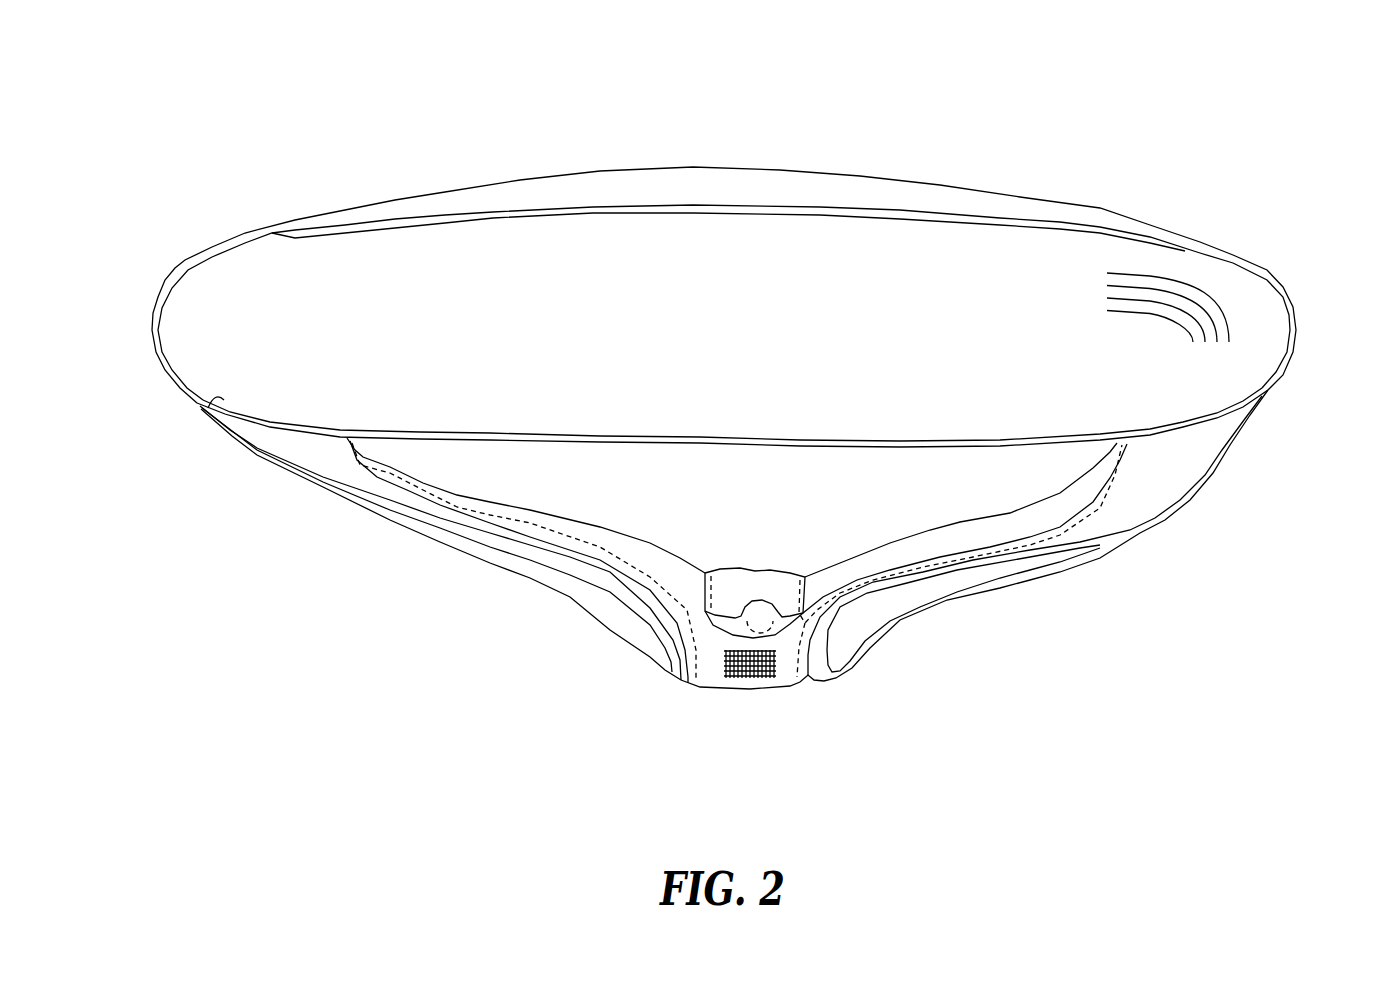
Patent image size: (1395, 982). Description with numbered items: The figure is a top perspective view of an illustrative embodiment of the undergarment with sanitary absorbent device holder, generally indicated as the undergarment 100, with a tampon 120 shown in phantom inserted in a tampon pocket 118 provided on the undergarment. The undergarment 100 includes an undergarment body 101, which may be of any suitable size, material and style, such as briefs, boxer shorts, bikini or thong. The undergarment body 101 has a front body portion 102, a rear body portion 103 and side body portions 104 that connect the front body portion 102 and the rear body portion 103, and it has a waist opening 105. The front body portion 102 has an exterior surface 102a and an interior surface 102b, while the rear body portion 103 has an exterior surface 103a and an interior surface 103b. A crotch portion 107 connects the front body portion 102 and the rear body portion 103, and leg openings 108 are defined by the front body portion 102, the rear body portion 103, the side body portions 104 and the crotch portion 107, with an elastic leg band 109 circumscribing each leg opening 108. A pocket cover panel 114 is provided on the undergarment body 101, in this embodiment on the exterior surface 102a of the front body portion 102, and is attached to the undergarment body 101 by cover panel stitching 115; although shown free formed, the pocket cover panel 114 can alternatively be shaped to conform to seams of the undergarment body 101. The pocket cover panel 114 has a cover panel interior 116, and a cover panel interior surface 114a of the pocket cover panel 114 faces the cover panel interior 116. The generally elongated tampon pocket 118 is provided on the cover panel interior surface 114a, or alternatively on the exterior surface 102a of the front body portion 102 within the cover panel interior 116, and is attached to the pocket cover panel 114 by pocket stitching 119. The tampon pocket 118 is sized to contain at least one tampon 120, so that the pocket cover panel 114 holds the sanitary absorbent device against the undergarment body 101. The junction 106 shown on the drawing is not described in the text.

The undergarment 100 is at (447, 112).
The undergarment body 101 is at (728, 262).
The front body portion 102 is at (703, 561).
The exterior surface 102a is at (762, 445).
The interior surface 102b is at (795, 440).
The rear body portion 103 is at (560, 211).
The exterior surface 103a is at (702, 187).
The interior surface 103b is at (790, 219).
The side body portions 104 is at (150, 333).
The waist opening 105 is at (206, 284).
The junction 106 is at (210, 400).
The crotch portion 107 is at (813, 676).
The leg openings 108 is at (565, 603).
The elastic leg band 109 is at (655, 632).
The pocket cover panel 114 is at (1098, 482).
The cover panel interior surface 114a is at (833, 568).
The cover panel stitching 115 is at (1132, 445).
The cover panel interior 116 is at (965, 470).
The tampon pocket 118 is at (770, 583).
The pocket stitching 119 is at (702, 582).
The tampon 120 is at (738, 681).